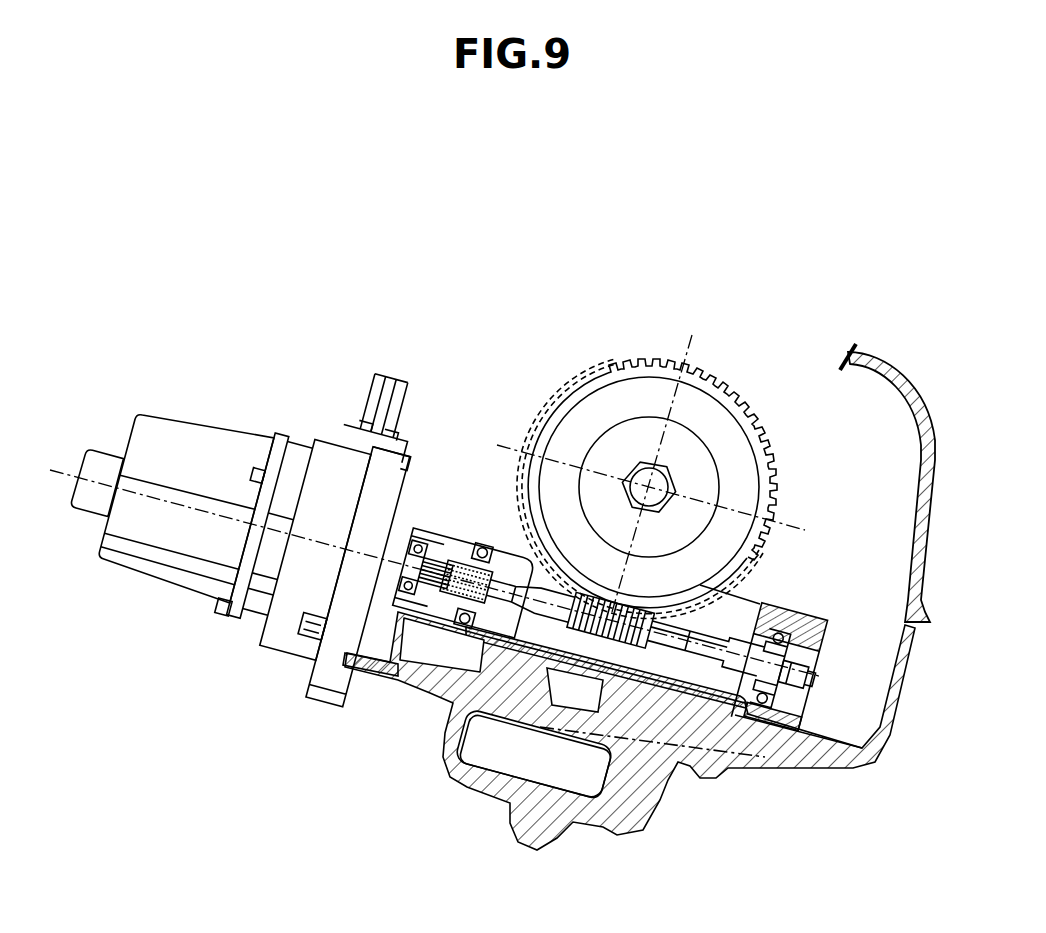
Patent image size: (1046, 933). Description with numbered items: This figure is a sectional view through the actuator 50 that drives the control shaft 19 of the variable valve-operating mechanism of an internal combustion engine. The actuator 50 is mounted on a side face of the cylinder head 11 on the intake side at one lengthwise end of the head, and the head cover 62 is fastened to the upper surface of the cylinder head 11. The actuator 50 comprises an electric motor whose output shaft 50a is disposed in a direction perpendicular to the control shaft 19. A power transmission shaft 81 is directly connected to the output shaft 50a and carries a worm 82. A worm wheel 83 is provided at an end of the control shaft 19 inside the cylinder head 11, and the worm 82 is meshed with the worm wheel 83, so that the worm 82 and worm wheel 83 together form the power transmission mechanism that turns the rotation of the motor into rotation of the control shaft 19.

The cylinder head 11 is at (880, 722).
The control shaft 19 is at (663, 487).
The actuator 50 is at (208, 448).
The output shaft 50a is at (415, 563).
The head cover 62 is at (905, 382).
The power transmission shaft 81 is at (533, 593).
The worm 82 is at (632, 617).
The worm wheel 83 is at (727, 427).